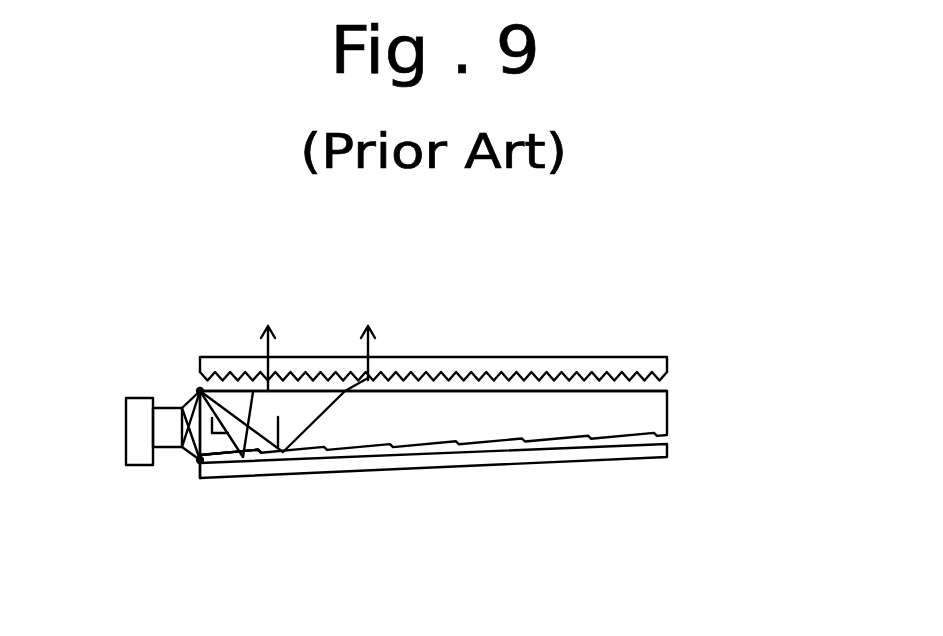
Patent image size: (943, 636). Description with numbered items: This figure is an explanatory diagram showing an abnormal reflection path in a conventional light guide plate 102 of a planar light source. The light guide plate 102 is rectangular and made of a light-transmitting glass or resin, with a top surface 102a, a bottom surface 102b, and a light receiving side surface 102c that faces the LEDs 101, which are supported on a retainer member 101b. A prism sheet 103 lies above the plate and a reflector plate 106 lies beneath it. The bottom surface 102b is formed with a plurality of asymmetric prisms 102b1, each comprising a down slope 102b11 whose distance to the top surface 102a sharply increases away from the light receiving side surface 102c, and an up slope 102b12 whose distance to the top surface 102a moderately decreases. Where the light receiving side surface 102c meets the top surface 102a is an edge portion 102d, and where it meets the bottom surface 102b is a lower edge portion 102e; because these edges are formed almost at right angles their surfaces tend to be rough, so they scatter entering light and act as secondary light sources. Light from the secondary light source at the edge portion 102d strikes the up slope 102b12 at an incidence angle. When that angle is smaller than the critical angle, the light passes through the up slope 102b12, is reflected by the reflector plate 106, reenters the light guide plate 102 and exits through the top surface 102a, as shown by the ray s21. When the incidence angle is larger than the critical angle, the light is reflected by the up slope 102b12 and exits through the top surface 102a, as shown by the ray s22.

The LED 101 is at (168, 406).
The retainer member 101b is at (126, 446).
The light guide plate 102 is at (665, 409).
The top surface 102a is at (665, 406).
The bottom surface 102b is at (423, 453).
The asymmetric prism 102b1 is at (385, 508).
The down slope 102b11 is at (229, 455).
The up slope 102b12 is at (214, 463).
The light receiving side surface 102c is at (199, 456).
The edge portion 102d is at (200, 390).
The lower edge portion 102e is at (199, 462).
The prism sheet 103 is at (664, 369).
The reflector plate 106 is at (636, 458).
The ray s21 is at (258, 351).
The ray s22 is at (373, 351).